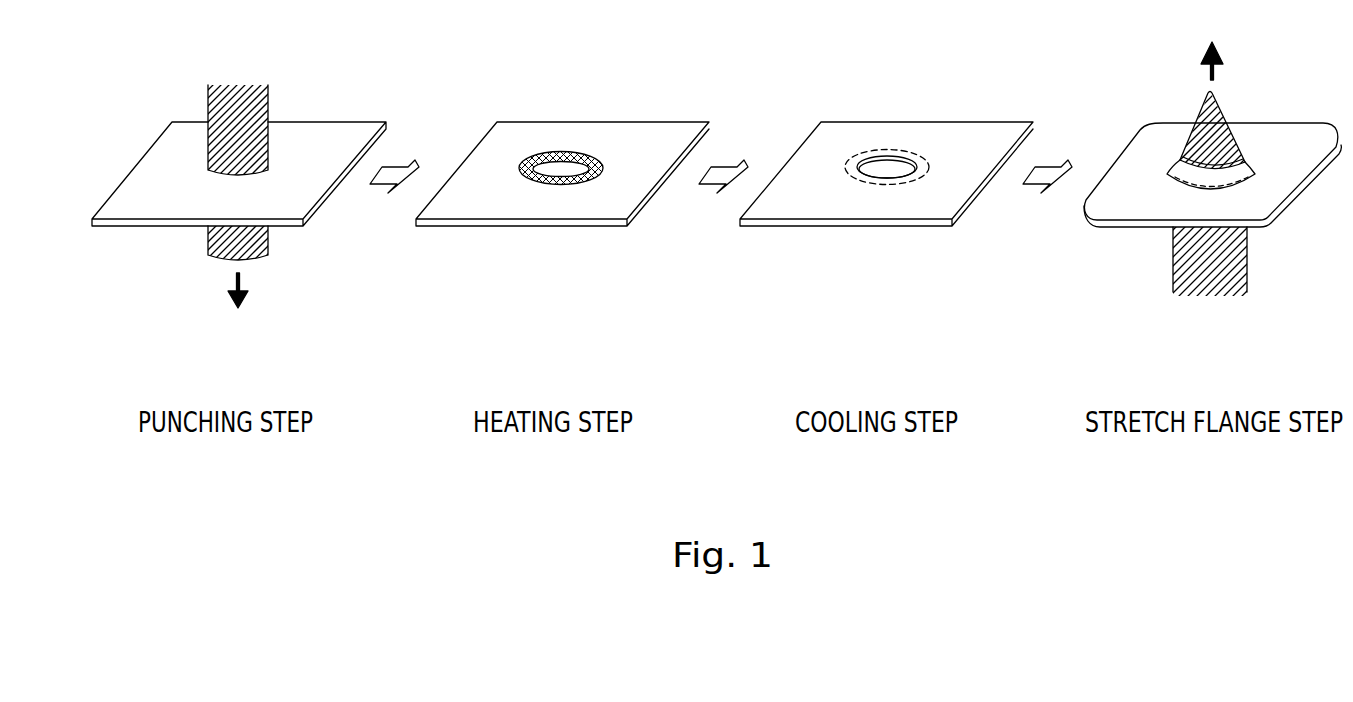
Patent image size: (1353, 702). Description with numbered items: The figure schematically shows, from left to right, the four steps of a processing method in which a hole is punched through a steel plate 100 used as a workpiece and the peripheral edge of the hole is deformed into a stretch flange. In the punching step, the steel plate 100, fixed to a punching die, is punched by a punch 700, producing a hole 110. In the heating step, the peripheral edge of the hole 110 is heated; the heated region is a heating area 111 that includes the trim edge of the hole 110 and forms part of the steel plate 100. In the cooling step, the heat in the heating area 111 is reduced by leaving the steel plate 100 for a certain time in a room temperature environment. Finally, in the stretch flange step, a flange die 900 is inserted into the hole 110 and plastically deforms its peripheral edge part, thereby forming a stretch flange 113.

The steel plate 100 is at (342, 135).
The punch 700 is at (265, 242).
The hole 110 is at (570, 140).
The heating area 111 is at (523, 168).
The stretch flange 113 is at (1248, 170).
The flange die 900 is at (1237, 257).